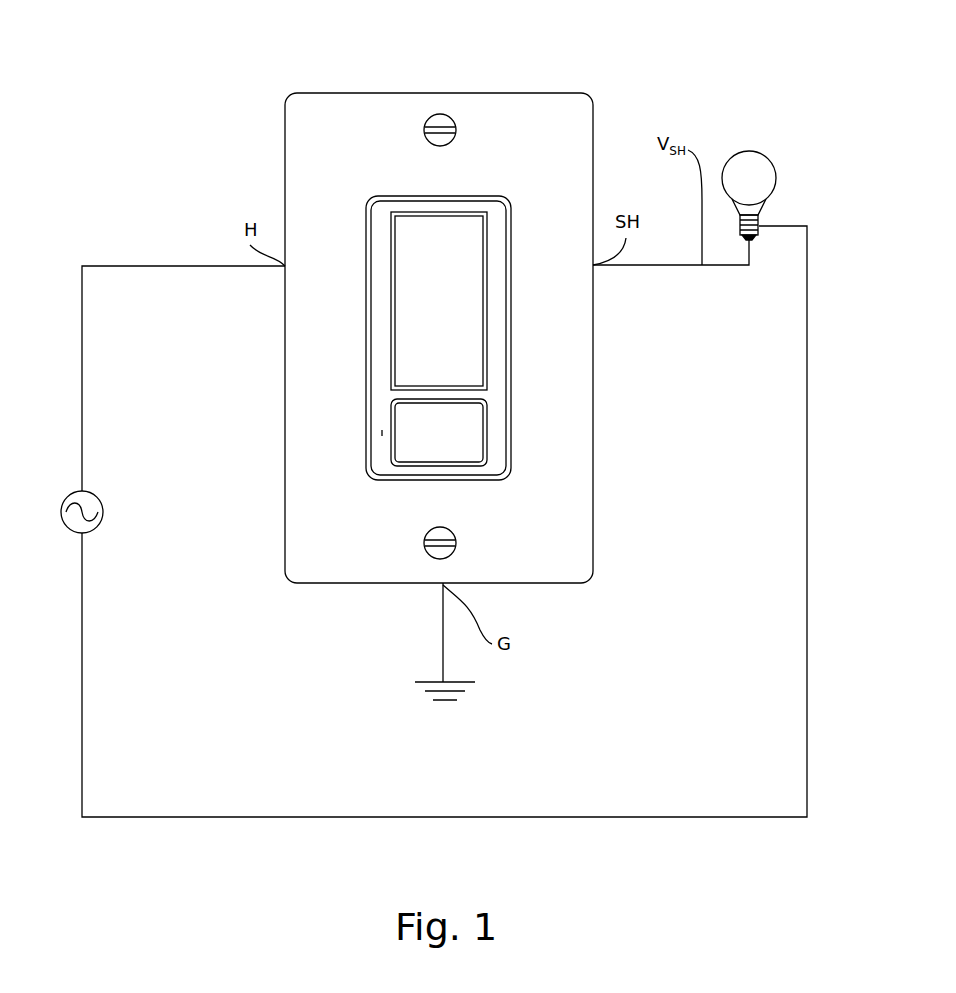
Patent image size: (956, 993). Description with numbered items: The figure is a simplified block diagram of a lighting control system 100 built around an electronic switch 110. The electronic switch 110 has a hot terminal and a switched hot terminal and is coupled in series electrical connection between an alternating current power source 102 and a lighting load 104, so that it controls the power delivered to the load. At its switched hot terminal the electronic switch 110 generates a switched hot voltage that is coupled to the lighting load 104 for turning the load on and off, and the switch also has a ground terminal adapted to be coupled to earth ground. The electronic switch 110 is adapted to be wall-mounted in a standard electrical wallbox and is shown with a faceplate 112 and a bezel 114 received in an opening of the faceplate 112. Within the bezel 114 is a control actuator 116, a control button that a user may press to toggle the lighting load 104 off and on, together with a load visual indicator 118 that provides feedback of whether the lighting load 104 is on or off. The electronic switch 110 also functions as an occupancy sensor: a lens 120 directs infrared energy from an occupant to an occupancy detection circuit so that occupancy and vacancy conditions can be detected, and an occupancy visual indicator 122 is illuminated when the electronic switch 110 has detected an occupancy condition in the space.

The lighting control system 100 is at (150, 163).
The alternating current (AC) power source 102 is at (93, 497).
The lighting load 104 is at (740, 172).
The electronic switch 110 is at (439, 300).
The faceplate 112 is at (343, 147).
The bezel 114 is at (495, 243).
The control actuator 116 is at (443, 318).
The load visual indicator 118 is at (382, 300).
The lens 120 is at (452, 440).
The occupancy visual indicator 122 is at (382, 433).